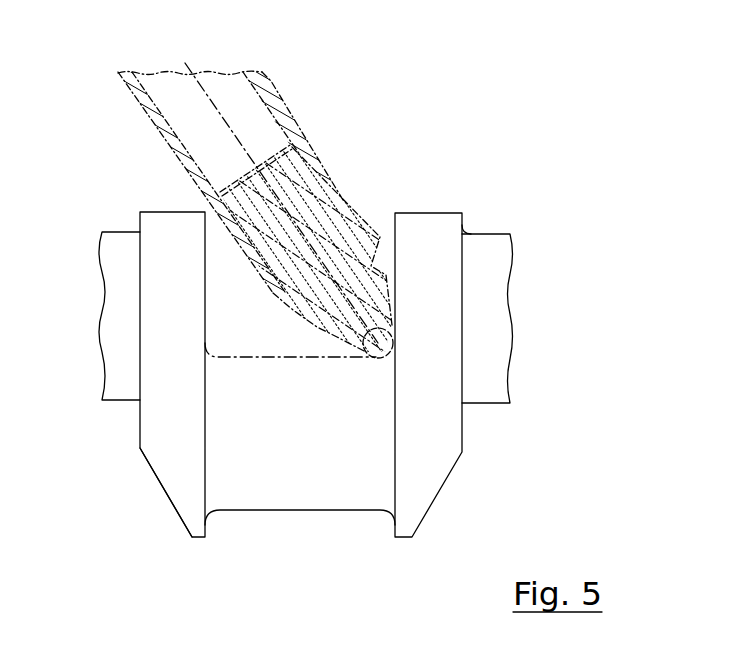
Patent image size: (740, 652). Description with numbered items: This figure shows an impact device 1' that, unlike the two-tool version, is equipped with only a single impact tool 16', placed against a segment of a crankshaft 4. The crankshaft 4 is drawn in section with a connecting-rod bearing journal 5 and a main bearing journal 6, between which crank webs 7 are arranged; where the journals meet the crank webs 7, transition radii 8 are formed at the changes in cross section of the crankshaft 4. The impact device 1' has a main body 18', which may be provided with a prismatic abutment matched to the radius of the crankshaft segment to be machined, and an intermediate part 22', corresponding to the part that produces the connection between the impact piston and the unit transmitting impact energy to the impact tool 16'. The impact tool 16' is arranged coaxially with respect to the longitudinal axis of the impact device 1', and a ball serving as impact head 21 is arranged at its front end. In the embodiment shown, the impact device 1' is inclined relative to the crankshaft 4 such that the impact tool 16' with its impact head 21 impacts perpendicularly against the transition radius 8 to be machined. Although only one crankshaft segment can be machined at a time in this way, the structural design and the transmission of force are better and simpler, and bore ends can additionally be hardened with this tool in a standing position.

The impact device 1' is at (248, 203).
The intermediate part 22' is at (227, 149).
The main body 18' is at (221, 209).
The impact tool 16' is at (316, 240).
The impact head 21 is at (378, 360).
The crankshaft 4 is at (580, 250).
The transition radius 8 is at (212, 342).
The main bearing journal 6 is at (110, 297).
The crank web 7 is at (168, 478).
The connecting-rod bearing journal 5 is at (307, 497).